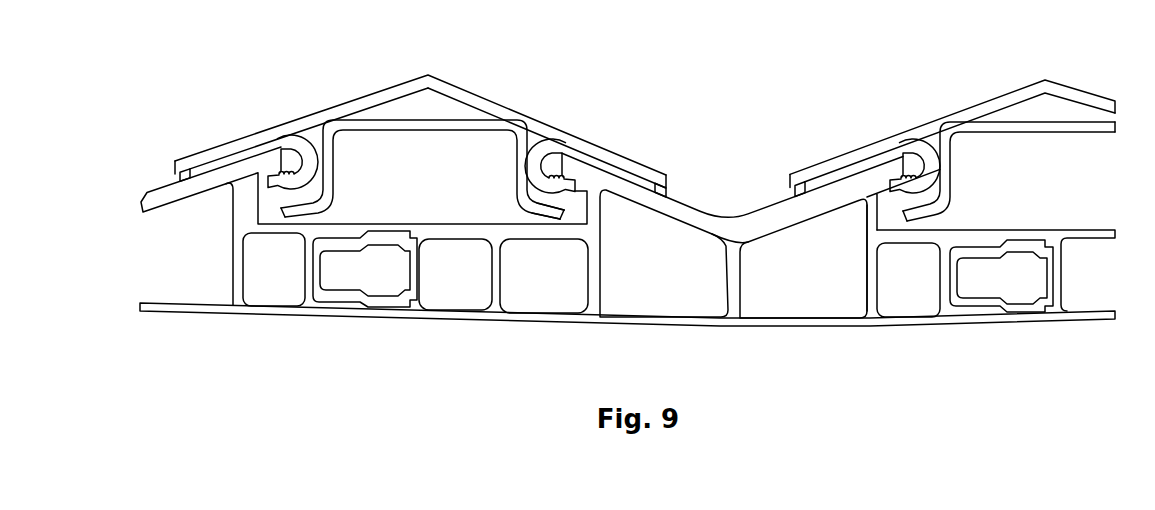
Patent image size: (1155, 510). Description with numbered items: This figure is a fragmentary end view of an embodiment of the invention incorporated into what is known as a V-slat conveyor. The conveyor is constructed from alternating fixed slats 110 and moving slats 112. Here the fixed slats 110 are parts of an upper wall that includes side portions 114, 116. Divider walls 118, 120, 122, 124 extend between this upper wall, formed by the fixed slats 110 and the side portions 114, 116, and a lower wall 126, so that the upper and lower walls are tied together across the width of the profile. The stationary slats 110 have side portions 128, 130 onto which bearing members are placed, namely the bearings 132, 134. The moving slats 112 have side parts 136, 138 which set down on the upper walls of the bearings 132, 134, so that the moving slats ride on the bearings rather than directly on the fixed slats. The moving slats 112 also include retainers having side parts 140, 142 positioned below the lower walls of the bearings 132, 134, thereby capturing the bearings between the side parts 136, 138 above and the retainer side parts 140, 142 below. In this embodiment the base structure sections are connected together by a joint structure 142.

The fixed slat 110 is at (150, 202).
The moving slat 112 is at (477, 95).
The side portion 114 is at (445, 224).
The side portion 116 is at (360, 231).
The divider wall 118 is at (233, 270).
The divider wall 120 is at (502, 292).
The divider wall 122 is at (582, 298).
The divider wall 124 is at (741, 294).
The lower wall 126 is at (693, 326).
The side portion 128 is at (561, 161).
The side portion 130 is at (282, 160).
The bearing 132 is at (228, 157).
The bearing 134 is at (636, 176).
The side part 136 is at (190, 158).
The side part 138 is at (605, 150).
The retainer side part 140 is at (290, 210).
The retainer side part 142 is at (540, 215).